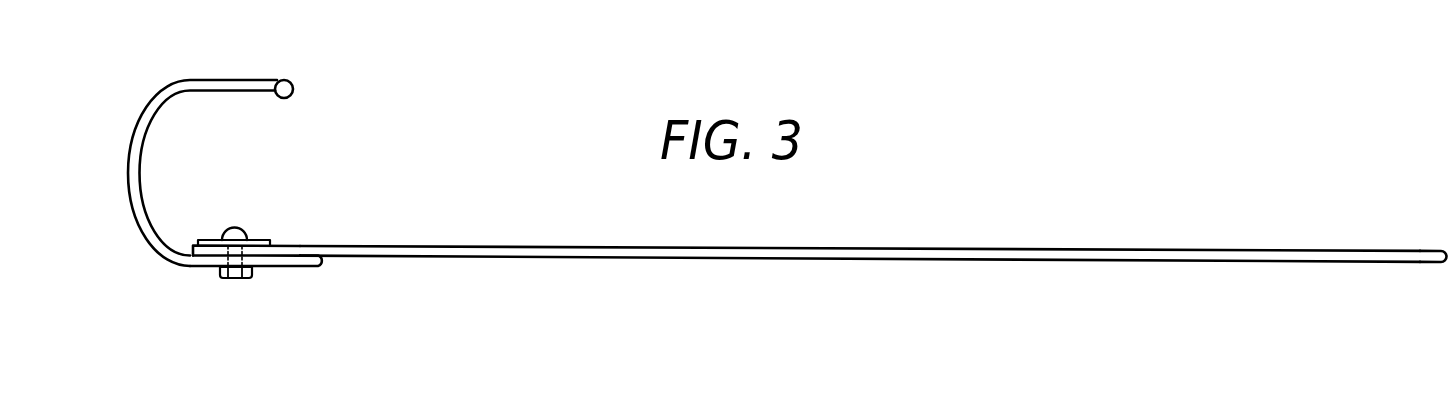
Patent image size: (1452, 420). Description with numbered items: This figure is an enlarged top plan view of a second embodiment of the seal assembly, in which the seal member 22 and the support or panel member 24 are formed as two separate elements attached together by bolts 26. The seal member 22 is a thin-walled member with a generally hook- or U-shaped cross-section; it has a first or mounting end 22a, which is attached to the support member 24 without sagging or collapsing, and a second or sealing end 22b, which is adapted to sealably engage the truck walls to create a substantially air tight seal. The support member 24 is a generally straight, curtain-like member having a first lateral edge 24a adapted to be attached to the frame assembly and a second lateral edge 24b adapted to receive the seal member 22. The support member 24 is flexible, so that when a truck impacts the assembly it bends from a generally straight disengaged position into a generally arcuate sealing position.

The seal member 22 is at (136, 128).
The mounting end 22a is at (320, 267).
The sealing end 22b is at (282, 80).
The support member 24 is at (839, 258).
The first lateral edge 24a is at (1380, 250).
The second lateral edge 24b is at (287, 246).
The bolts 26 is at (238, 279).